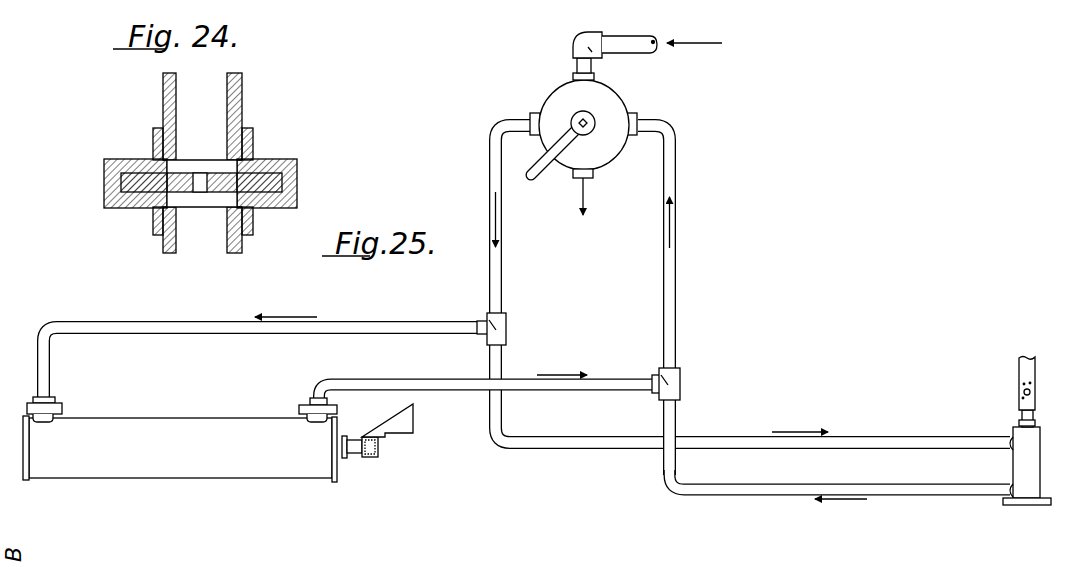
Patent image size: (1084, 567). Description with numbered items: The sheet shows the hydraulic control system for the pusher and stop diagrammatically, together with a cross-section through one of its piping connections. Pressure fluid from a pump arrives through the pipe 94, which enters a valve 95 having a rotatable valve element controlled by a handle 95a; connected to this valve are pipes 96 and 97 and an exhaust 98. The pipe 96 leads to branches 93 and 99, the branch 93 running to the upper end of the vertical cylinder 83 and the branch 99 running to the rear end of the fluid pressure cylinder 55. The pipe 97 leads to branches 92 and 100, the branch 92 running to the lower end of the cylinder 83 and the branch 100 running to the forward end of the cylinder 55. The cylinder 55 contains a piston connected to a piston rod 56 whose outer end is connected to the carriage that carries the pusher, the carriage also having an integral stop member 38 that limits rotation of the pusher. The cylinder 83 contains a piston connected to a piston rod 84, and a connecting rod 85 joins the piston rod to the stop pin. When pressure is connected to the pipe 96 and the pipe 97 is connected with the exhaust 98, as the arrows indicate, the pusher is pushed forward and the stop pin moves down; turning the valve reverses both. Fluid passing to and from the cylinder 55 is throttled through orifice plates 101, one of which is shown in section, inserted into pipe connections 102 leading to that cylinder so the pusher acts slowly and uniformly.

In FIG. 24, the orifice plate 101 is at (247, 167).
In FIG. 24, the pipe connection 102 is at (297, 182).
In FIG. 25, the pipe connection 102 is at (62, 405).
In FIG. 25, the stop member 38 is at (403, 425).
In FIG. 25, the fluid pressure cylinder 55 is at (206, 470).
In FIG. 25, the piston rod 56 is at (354, 450).
In FIG. 25, the cylinder 83 is at (1030, 463).
In FIG. 25, the piston rod 84 is at (1035, 414).
In FIG. 25, the connecting rod 85 is at (1035, 363).
In FIG. 25, the branch 92 is at (932, 488).
In FIG. 25, the branch 93 is at (904, 440).
In FIG. 25, the pipe 94 is at (628, 38).
In FIG. 25, the valve 95 is at (582, 150).
In FIG. 25, the handle 95a is at (540, 172).
In FIG. 25, the pipe 96 is at (489, 174).
In FIG. 25, the pipe 97 is at (677, 174).
In FIG. 25, the exhaust 98 is at (594, 173).
In FIG. 25, the branch 99 is at (363, 332).
In FIG. 25, the branch 100 is at (402, 387).